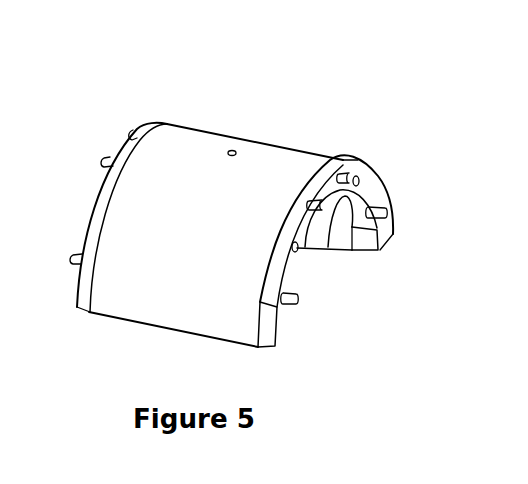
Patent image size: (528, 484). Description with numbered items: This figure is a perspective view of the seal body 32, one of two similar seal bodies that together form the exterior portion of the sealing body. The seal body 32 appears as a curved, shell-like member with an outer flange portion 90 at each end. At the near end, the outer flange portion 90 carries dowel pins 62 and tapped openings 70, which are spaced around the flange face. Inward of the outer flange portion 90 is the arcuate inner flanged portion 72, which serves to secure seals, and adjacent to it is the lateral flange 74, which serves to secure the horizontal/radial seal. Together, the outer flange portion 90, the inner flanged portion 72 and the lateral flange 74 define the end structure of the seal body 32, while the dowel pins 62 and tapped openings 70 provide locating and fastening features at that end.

The seal body 32 is at (258, 162).
The dowel pins 62 is at (348, 176).
The tapped openings 70 is at (357, 177).
The inner flanged portion 72 is at (345, 243).
The lateral flange 74 is at (350, 250).
The outer flange portion 90 is at (124, 152).